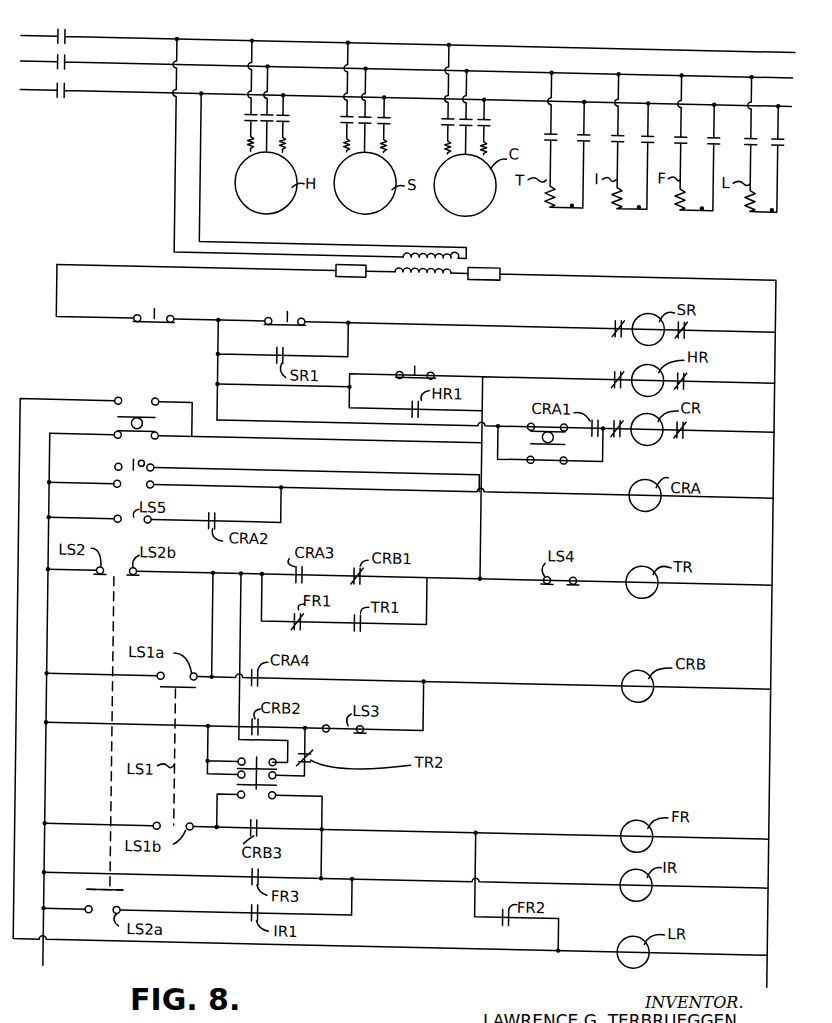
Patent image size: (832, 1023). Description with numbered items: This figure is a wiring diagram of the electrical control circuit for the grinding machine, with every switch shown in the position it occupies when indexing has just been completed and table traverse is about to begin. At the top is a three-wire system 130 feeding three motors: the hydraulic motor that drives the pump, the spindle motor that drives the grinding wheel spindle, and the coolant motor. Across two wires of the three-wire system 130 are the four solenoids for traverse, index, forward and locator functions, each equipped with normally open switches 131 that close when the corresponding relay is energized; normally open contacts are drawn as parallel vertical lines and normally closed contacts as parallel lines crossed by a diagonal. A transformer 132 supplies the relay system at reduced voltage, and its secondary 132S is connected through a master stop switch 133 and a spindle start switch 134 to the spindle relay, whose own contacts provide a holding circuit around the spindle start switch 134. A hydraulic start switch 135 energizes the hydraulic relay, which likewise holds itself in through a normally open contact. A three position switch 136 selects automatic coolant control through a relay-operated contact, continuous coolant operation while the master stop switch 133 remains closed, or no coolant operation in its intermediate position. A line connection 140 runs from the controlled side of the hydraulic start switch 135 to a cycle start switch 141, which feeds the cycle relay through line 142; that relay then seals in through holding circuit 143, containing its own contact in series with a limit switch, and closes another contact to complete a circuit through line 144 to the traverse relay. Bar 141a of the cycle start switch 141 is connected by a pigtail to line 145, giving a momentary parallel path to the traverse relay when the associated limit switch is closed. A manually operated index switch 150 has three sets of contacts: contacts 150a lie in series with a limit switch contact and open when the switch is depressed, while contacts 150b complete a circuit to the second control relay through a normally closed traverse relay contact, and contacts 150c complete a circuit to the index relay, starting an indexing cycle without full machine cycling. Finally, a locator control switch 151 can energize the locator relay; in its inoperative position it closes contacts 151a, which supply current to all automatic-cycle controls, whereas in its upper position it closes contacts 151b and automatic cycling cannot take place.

The three-wire system 130 is at (117, 59).
The normally open switches 131 is at (542, 131).
The transformer 132 is at (458, 252).
The secondary of the transformer 132S is at (430, 278).
The master stop switch 133 is at (169, 304).
The spindle start switch 134 is at (289, 319).
The hydraulic start switch 135 is at (428, 367).
The three position switch 136 is at (548, 450).
The line connection 140 is at (308, 444).
The cycle start switch 141 is at (114, 488).
The bar of switch 141 141a is at (129, 472).
The line 142 is at (350, 494).
The holding circuit 143 is at (280, 513).
The line 144 is at (213, 625).
The line 145 is at (229, 473).
The manually operated index switch 150 is at (281, 772).
The contacts 150a is at (279, 763).
The contacts 150b is at (279, 780).
The contacts 150c is at (278, 801).
The locator control switch 151 is at (125, 385).
The contacts 151a is at (114, 438).
The contacts 151b is at (155, 406).